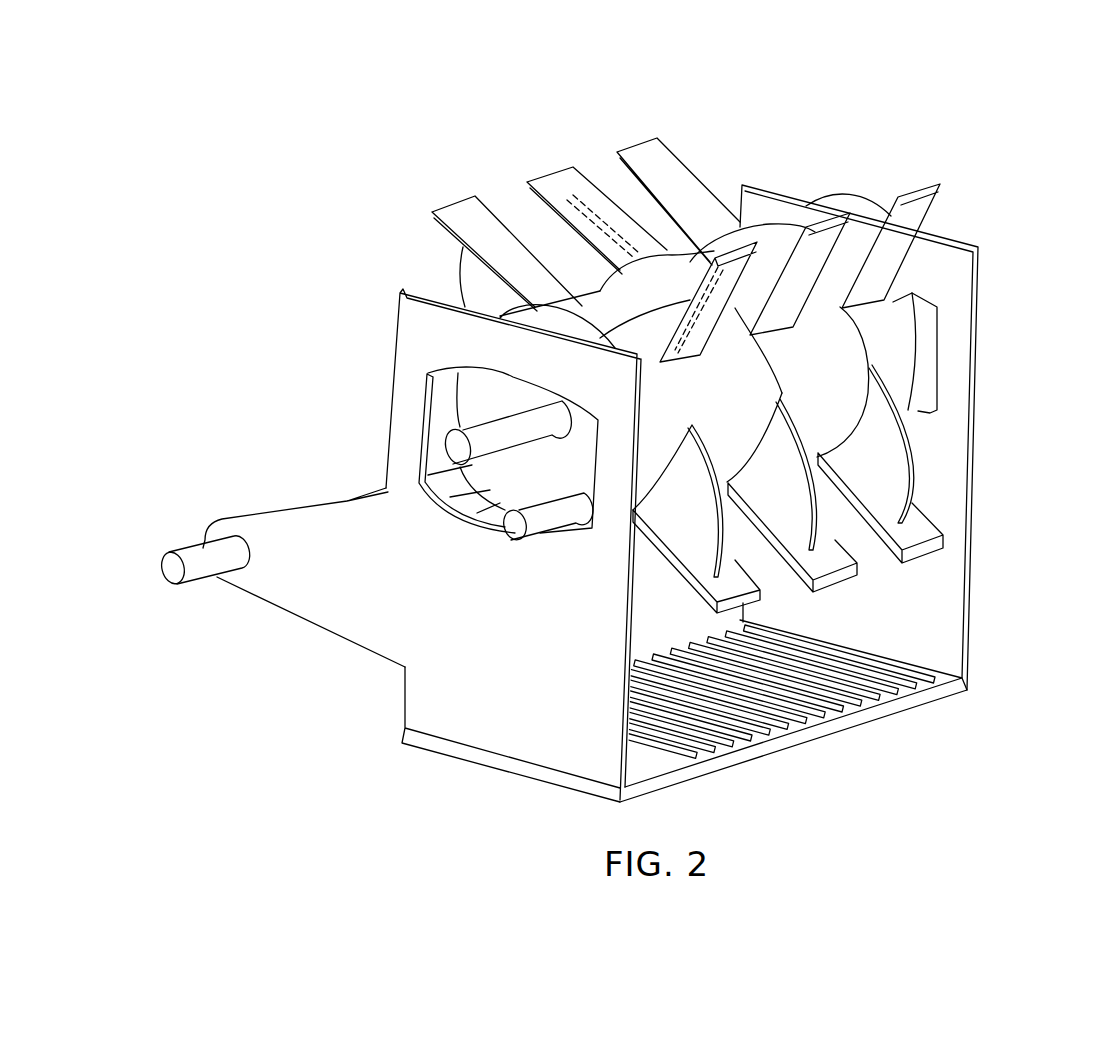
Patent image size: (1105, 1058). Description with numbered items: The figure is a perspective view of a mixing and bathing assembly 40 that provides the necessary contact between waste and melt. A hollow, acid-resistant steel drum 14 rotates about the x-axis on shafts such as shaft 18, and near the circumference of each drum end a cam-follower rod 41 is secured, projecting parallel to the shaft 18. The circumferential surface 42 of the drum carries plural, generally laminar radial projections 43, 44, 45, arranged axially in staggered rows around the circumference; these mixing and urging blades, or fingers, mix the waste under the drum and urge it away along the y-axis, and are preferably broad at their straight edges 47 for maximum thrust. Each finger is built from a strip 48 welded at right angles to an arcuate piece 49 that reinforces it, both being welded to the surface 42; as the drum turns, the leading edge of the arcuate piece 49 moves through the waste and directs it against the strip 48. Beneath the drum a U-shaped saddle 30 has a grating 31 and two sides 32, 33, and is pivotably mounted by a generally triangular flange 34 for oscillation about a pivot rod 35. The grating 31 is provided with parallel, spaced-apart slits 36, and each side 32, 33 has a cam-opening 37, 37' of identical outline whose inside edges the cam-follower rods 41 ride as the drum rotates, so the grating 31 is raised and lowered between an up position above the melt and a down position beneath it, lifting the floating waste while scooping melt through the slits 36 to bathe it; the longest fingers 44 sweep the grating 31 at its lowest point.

The steel drum 14 is at (912, 340).
The shaft 18 is at (492, 422).
The U-shaped saddle 30 is at (463, 772).
The grating 31 is at (858, 727).
The side 32 is at (403, 693).
The side 33 is at (983, 269).
The triangular flange 34 is at (298, 620).
The pivot rod 35 is at (198, 581).
The slits 36 is at (683, 653).
The cam-opening 37 is at (502, 455).
The cam-opening 37' is at (954, 353).
The mixing and bathing assembly 40 is at (984, 478).
The cam-follower rod 41 is at (535, 493).
The circumferential surface 42 is at (830, 372).
The radial projection 43 is at (545, 220).
The radial projection 44 is at (783, 437).
The radial projection 45 is at (873, 193).
The straight edge 47 is at (681, 393).
The strip 48 is at (758, 592).
The arcuate piece 49 is at (886, 469).